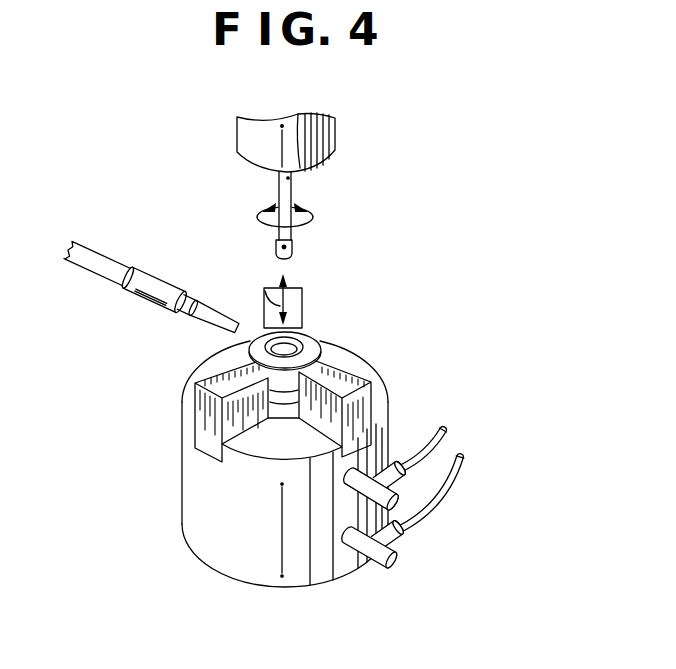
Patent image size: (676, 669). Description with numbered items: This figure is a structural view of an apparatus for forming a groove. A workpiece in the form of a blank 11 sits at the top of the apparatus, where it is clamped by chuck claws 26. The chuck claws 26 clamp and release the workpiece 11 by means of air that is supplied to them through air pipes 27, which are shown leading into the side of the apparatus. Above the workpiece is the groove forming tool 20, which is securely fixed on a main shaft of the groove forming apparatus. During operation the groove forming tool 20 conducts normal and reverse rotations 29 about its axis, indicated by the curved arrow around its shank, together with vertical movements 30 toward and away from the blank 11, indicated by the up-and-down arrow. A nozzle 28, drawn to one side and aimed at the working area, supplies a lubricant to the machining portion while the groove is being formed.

The blank 11 is at (307, 334).
The groove forming tool 20 is at (292, 178).
The chuck claws 26 is at (338, 372).
The air pipes 27 is at (441, 427).
The nozzle 28 is at (132, 297).
The normal/reverse rotations 29 is at (317, 226).
The vertical movements 30 is at (268, 288).